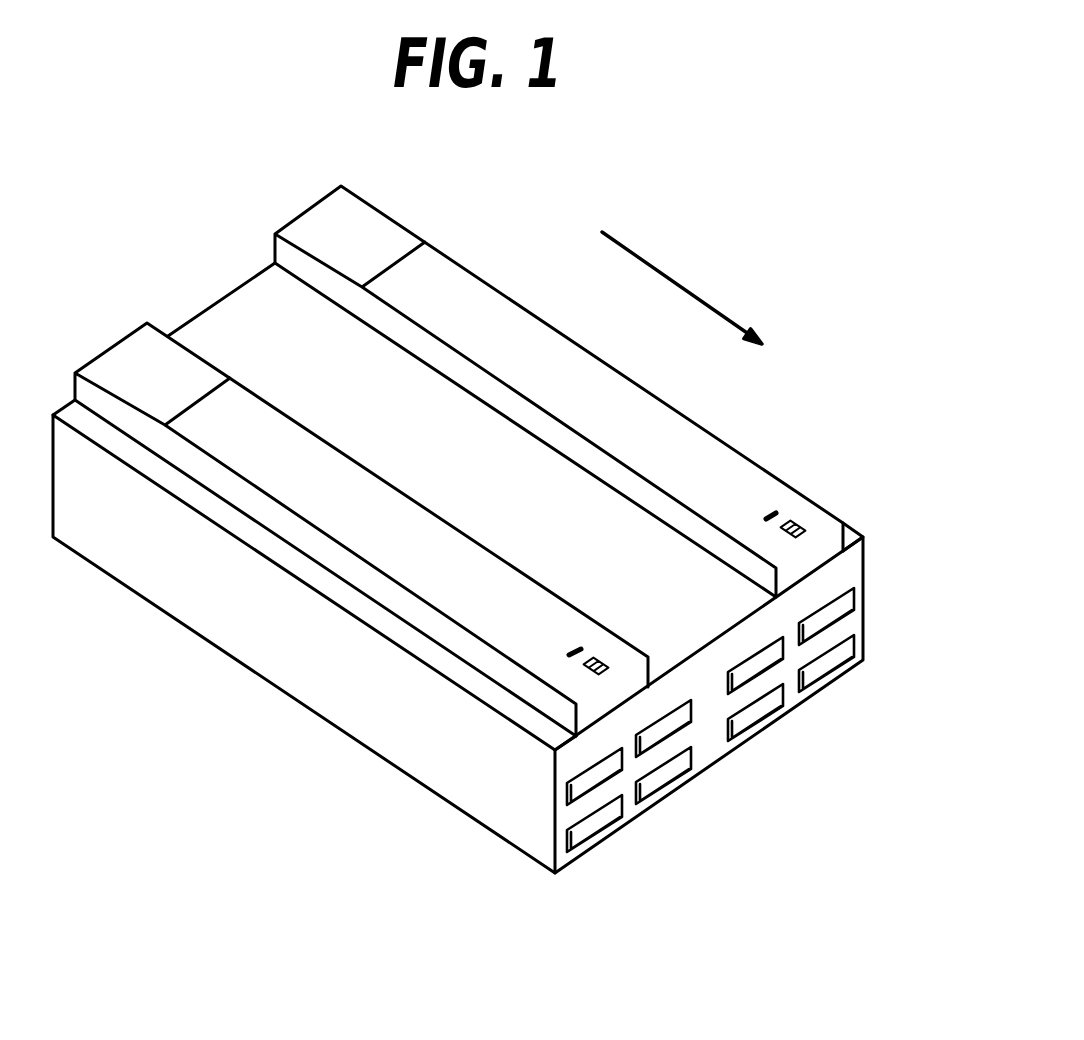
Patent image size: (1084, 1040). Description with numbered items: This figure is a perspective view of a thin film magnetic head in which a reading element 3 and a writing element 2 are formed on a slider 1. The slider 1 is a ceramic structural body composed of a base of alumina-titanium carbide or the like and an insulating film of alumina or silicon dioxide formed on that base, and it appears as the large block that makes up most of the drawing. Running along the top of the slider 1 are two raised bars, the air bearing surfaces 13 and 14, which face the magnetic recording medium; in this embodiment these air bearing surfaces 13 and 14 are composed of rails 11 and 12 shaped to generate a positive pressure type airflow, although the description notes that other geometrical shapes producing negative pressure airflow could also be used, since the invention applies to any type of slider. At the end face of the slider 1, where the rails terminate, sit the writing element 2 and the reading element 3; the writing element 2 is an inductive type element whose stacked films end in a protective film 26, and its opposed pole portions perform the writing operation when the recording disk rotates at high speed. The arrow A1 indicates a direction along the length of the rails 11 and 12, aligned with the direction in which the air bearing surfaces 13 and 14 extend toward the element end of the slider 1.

The slider 1 is at (262, 635).
The writing element 2 is at (802, 520).
The reading element 3 is at (773, 510).
The rail 11 is at (553, 712).
The rail 12 is at (858, 533).
The air bearing surface 13 is at (352, 488).
The air bearing surface 14 is at (480, 303).
The protective film 26 is at (845, 562).
The fitting direction A1 is at (683, 287).